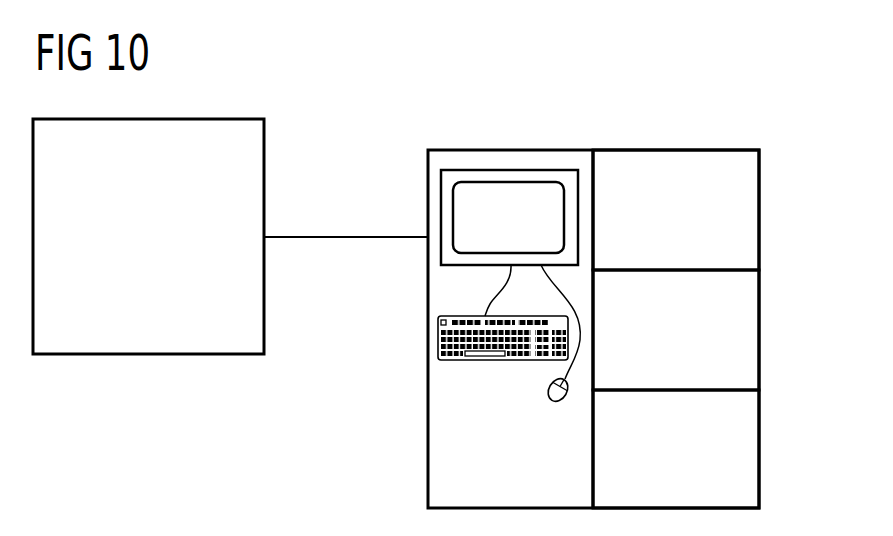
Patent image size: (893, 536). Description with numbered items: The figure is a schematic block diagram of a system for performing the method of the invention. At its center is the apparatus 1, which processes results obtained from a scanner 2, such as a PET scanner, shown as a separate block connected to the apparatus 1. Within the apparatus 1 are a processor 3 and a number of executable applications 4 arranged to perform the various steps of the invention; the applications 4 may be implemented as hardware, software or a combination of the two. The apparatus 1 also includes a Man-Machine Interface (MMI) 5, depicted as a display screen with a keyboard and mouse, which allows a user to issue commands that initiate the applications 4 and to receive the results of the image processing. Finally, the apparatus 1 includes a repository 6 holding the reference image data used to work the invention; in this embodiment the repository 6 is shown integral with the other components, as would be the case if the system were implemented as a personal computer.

The apparatus 1 is at (599, 142).
The scanner 2 is at (266, 155).
The processor 3 is at (753, 211).
The executable applications 4 is at (753, 329).
The Man-Machine Interface (MMI) 5 is at (453, 285).
The repository 6 is at (753, 449).